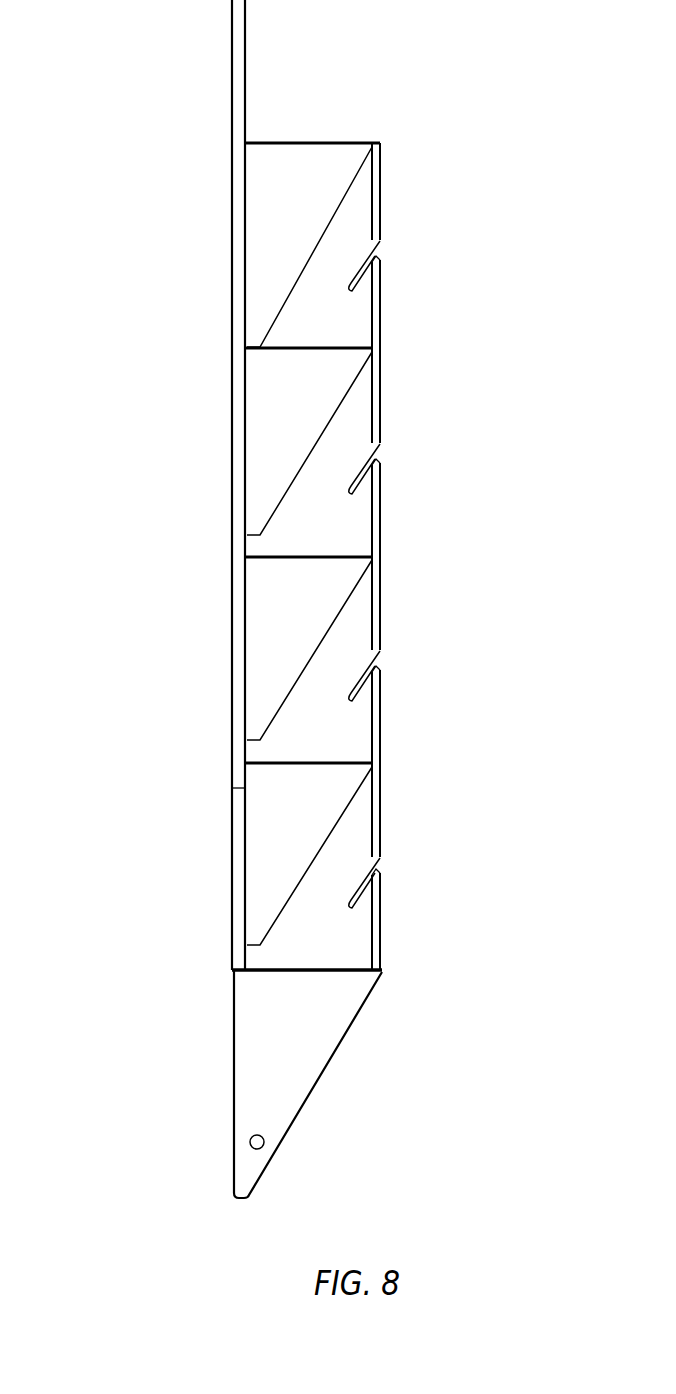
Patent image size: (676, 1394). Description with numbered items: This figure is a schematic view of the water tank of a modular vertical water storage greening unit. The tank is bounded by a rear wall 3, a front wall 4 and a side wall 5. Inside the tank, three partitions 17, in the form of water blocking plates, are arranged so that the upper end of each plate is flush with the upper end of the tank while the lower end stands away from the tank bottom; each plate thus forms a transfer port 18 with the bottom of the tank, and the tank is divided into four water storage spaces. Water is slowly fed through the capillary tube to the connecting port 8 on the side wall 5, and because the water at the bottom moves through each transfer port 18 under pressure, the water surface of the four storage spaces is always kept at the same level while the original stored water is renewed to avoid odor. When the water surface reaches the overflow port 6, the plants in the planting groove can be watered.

The rear wall of the water tank 3 is at (145, 485).
The front wall of the water tank 4 is at (472, 556).
The side wall of the water tank 5 is at (226, 1084).
The overflow port 6 is at (459, 574).
The connecting port 8 is at (386, 1066).
The partition 17 is at (370, 556).
The transfer port 18 is at (371, 546).